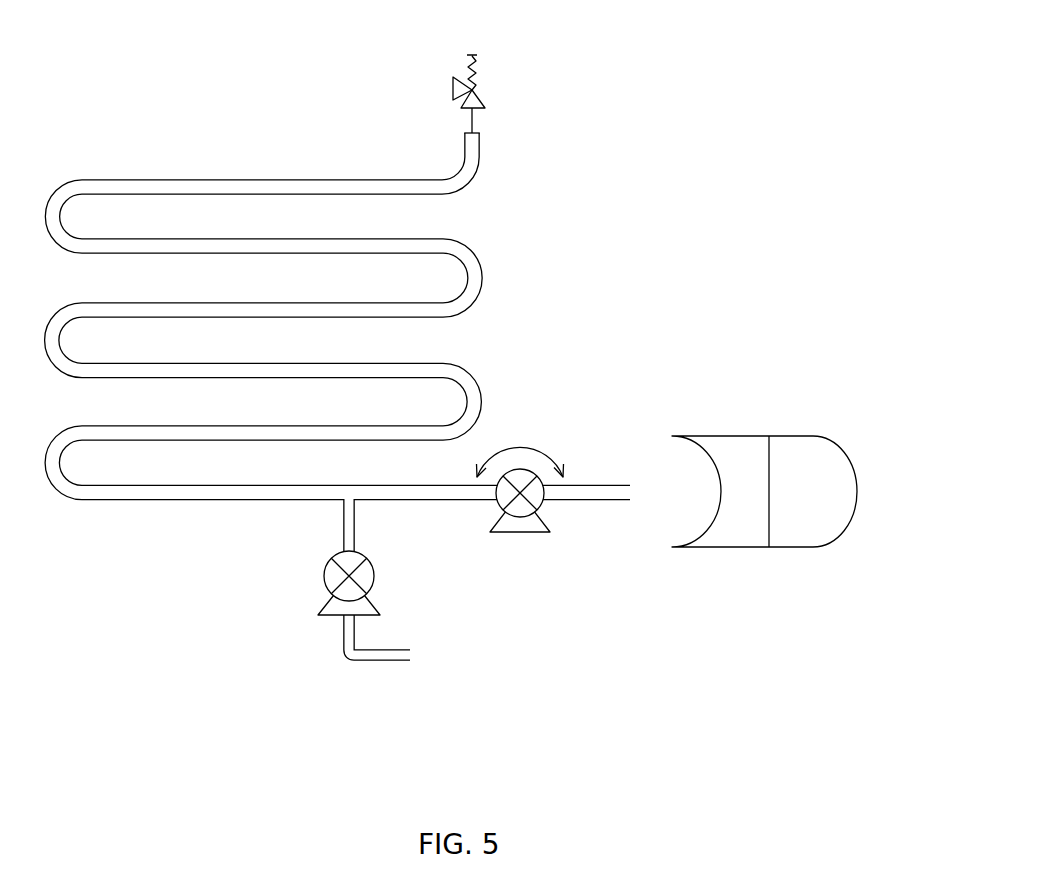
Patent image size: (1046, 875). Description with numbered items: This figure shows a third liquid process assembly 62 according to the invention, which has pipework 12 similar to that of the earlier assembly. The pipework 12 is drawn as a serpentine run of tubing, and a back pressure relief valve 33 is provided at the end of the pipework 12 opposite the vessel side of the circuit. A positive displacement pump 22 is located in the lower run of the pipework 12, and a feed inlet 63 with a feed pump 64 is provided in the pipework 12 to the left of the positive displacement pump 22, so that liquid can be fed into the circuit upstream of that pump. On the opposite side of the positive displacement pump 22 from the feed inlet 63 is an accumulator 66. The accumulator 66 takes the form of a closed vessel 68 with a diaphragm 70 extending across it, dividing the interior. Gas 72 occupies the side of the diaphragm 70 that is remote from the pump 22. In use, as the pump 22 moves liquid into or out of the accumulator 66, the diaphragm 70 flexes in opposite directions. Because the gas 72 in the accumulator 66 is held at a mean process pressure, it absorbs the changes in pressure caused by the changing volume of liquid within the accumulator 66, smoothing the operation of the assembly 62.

The pipework 12 is at (213, 183).
The positive displacement pump 22 is at (540, 502).
The back pressure relief valve 33 is at (477, 97).
The third assembly 62 is at (144, 563).
The feed inlet 63 is at (349, 510).
The feed pump 64 is at (333, 582).
The accumulator 66 is at (740, 483).
The closed vessel 68 is at (729, 547).
The diaphragm 70 is at (769, 480).
The gas 72 is at (823, 502).